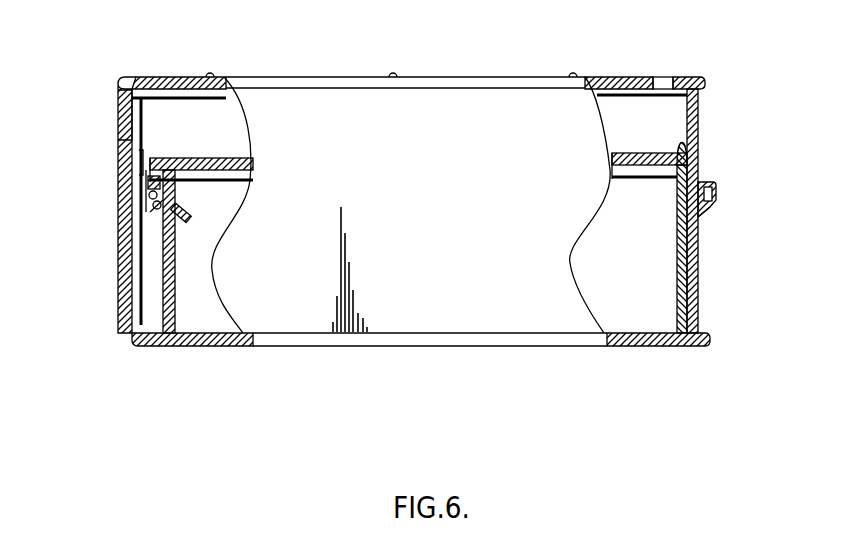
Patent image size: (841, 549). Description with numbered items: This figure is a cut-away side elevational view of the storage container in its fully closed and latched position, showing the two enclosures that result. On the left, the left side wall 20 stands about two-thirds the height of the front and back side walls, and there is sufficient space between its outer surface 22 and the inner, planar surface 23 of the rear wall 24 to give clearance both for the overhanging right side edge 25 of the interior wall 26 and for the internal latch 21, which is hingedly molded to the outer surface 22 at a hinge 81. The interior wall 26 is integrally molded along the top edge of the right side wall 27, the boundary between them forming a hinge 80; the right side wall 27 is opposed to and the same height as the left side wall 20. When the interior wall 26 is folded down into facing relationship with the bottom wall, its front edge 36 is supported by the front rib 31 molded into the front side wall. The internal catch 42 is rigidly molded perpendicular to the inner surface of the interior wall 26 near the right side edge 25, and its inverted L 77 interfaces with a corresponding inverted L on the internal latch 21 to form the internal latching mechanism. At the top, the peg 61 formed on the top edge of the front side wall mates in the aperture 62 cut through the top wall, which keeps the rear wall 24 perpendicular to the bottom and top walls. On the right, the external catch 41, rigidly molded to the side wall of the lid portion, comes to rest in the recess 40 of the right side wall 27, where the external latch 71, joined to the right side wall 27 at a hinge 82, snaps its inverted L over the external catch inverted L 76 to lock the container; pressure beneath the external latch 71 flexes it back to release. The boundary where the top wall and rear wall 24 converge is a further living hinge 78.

The left side wall 20 is at (165, 283).
The internal latch 21 is at (148, 200).
The outer surface 22 is at (135, 343).
The inner, planar surface 23 is at (123, 268).
The rear wall 24 is at (140, 293).
The right side edge 25 is at (143, 160).
The interior wall 26 is at (122, 127).
The right side wall 27 is at (703, 305).
The front rib 31 is at (207, 178).
The front edge 36 is at (213, 160).
The recess 40 is at (692, 190).
The external catch 41 is at (702, 250).
The internal catch 42 is at (140, 167).
The peg 61 is at (672, 77).
The aperture 62 is at (654, 78).
The external latch 71 is at (718, 186).
The external catch inverted L 76 is at (716, 206).
The inverted L 77 is at (150, 191).
The hinge 78 is at (122, 80).
The hinge 80 is at (700, 128).
The hinge 81 is at (168, 224).
The hinge 82 is at (705, 220).